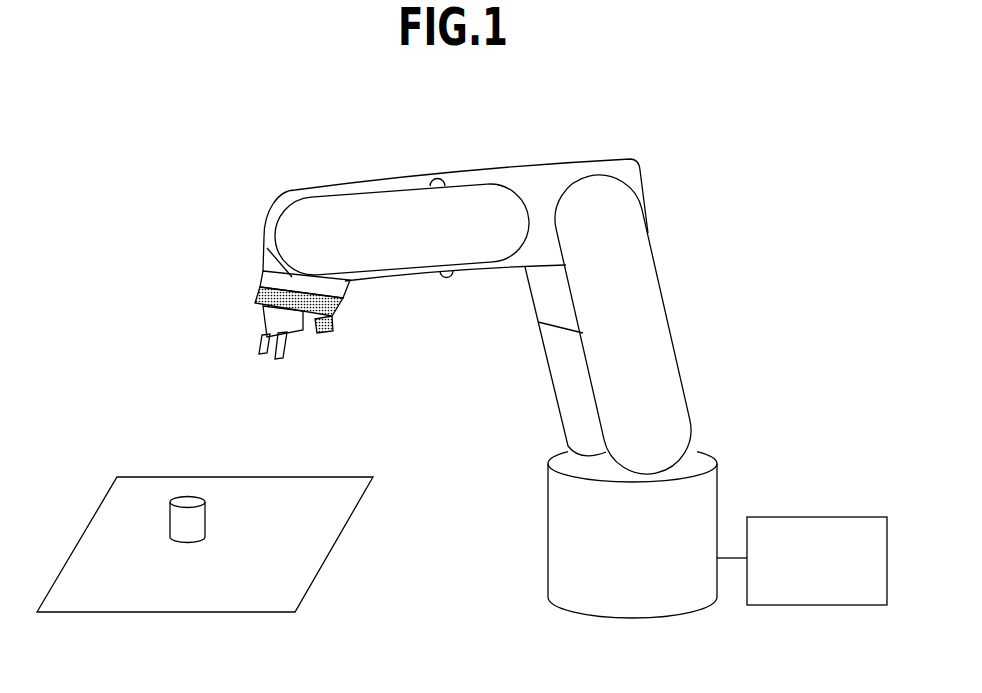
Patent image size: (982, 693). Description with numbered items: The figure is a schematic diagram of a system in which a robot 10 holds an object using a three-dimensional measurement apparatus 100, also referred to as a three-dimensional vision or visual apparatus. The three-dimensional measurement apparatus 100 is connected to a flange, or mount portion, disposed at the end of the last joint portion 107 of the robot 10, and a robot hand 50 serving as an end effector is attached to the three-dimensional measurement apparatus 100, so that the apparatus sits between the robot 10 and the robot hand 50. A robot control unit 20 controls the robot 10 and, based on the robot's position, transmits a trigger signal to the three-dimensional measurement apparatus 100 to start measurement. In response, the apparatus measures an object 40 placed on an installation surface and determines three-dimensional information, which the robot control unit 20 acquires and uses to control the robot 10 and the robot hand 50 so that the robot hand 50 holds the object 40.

The robot 10 is at (638, 283).
The robot control unit 20 is at (818, 527).
The object 40 is at (208, 520).
The robot hand 50 is at (260, 315).
The three-dimensional measurement apparatus 100 is at (258, 290).
The last joint portion 107 is at (268, 252).